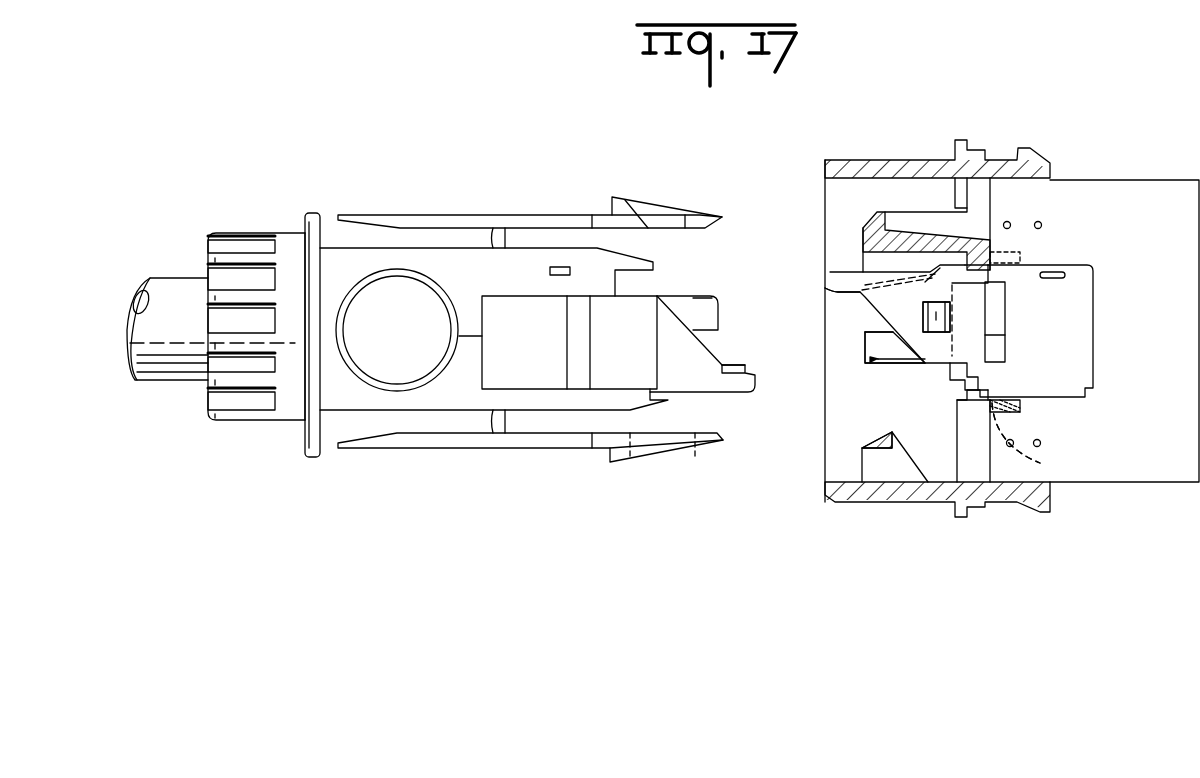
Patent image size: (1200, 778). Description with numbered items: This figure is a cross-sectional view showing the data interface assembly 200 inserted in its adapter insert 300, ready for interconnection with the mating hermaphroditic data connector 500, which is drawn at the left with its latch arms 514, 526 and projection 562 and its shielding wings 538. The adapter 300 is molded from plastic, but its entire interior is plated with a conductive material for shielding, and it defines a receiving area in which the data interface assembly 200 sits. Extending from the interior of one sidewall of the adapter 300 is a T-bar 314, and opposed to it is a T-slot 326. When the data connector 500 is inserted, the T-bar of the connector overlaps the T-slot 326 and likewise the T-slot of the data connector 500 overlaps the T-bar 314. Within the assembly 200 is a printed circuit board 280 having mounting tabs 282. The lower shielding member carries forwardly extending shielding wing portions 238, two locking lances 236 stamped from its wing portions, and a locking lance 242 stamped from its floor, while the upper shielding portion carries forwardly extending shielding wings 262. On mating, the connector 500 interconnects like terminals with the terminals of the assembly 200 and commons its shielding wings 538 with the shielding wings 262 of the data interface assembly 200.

The hermaphroditic data connector 500 is at (436, 186).
The upper latch arm 514 is at (702, 197).
The lower latch arm 526 is at (668, 458).
The shielding wings 538 is at (694, 298).
The keying projection 562 is at (736, 365).
The adapter insert 300 is at (831, 504).
The T-slot 326 is at (870, 215).
The mounting tabs 282 is at (1008, 252).
The printed circuit board 280 is at (1170, 180).
The data interface assembly 200 is at (1083, 257).
The locking lances 236 is at (948, 318).
The shielding wing portions 238 is at (888, 365).
The T-bar 314 is at (878, 428).
The locking lance 242 is at (1036, 457).
The shielding wings 262 is at (824, 290).